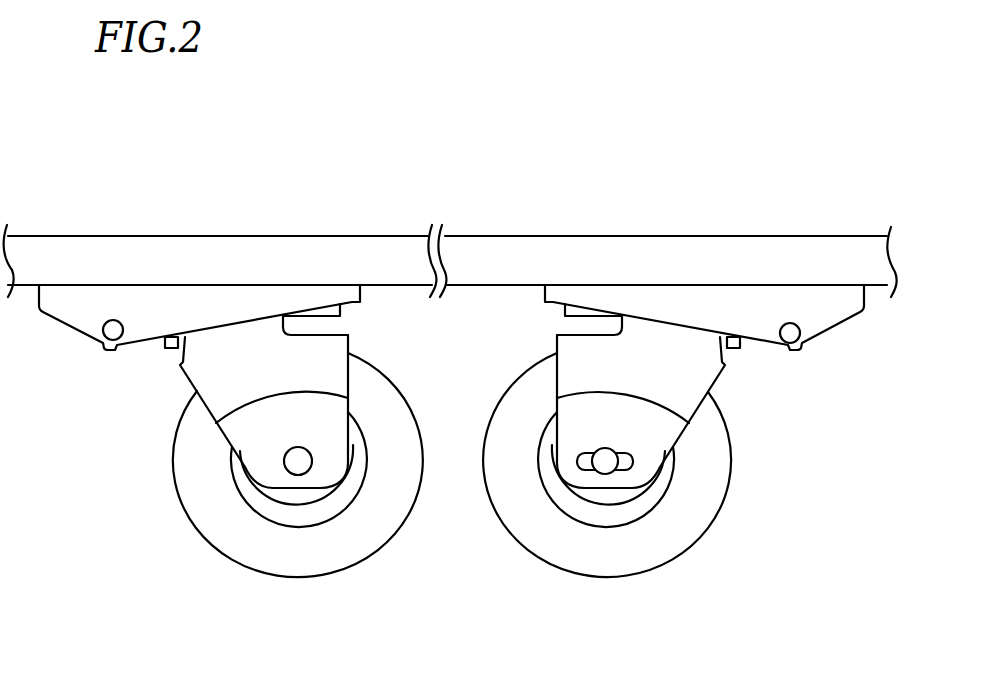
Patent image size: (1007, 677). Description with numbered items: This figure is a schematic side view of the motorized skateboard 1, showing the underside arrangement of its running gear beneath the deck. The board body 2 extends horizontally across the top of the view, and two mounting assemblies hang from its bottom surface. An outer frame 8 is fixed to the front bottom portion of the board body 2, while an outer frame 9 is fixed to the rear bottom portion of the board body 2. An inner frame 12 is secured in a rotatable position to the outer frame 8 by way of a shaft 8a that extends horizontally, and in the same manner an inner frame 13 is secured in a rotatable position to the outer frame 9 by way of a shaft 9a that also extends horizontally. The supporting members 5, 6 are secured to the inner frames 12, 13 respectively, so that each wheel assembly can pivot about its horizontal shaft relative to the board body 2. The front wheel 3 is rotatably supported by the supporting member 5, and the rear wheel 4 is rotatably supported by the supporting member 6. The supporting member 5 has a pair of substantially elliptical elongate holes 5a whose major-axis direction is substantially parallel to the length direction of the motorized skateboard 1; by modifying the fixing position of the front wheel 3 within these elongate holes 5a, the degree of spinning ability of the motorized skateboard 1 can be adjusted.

The motorized skateboard 1 is at (866, 117).
The board body 2 is at (842, 248).
The front wheel 3 is at (610, 565).
The rear wheel 4 is at (302, 565).
The supporting member 5 is at (570, 412).
The elongate holes 5a is at (625, 463).
The supporting member 6 is at (333, 413).
The outer frame 8 is at (830, 317).
The shaft 8a is at (798, 347).
The outer frame 9 is at (72, 313).
The shaft 9a is at (103, 347).
The inner frame 12 is at (575, 315).
The inner frame 13 is at (333, 314).